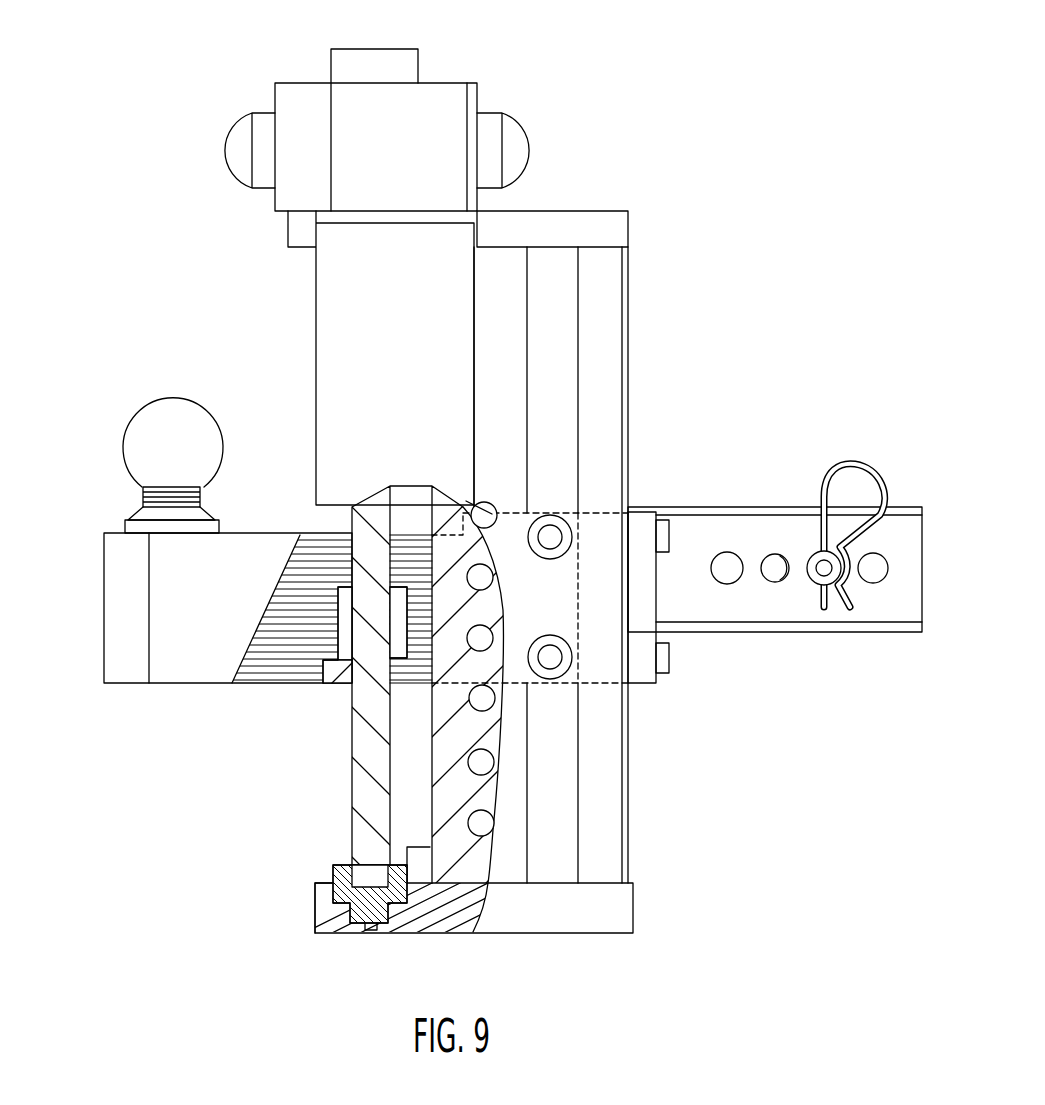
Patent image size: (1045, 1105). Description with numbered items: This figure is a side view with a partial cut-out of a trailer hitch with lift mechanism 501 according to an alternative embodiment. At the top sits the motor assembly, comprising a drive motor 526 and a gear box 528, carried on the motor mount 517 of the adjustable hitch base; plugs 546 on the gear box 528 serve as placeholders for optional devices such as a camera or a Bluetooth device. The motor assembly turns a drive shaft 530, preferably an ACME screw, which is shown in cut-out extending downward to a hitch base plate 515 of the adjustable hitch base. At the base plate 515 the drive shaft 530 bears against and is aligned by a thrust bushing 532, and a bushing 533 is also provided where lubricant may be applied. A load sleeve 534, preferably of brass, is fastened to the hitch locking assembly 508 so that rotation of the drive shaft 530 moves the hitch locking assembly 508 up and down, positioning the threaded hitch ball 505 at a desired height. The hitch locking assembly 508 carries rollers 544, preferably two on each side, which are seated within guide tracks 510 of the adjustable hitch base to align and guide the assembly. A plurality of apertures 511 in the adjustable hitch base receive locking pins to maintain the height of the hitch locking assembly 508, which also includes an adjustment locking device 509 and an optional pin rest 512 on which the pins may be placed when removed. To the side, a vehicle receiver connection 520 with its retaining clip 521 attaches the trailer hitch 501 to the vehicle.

The trailer hitch with lift mechanism 501 is at (745, 160).
The threaded hitch ball 505 is at (142, 410).
The hitch locking assembly 508 is at (270, 532).
The adjustment locking device 509 is at (487, 650).
The guide track 510 is at (578, 430).
The apertures 511 is at (497, 833).
The pin rest 512 is at (497, 503).
The hitch base plate 515 is at (607, 933).
The motor mount 517 is at (597, 211).
The vehicle receiver connection 520 is at (922, 583).
The hitch pin clip 521 is at (813, 582).
The drive motor 526 is at (314, 316).
The gear box 528 is at (293, 82).
The drive shaft 530 is at (352, 749).
The thrust bushing 532 is at (332, 900).
The bushing 533 is at (332, 639).
The load sleeve 534 is at (333, 870).
The rollers 544 is at (575, 520).
The plugs 546 is at (511, 117).